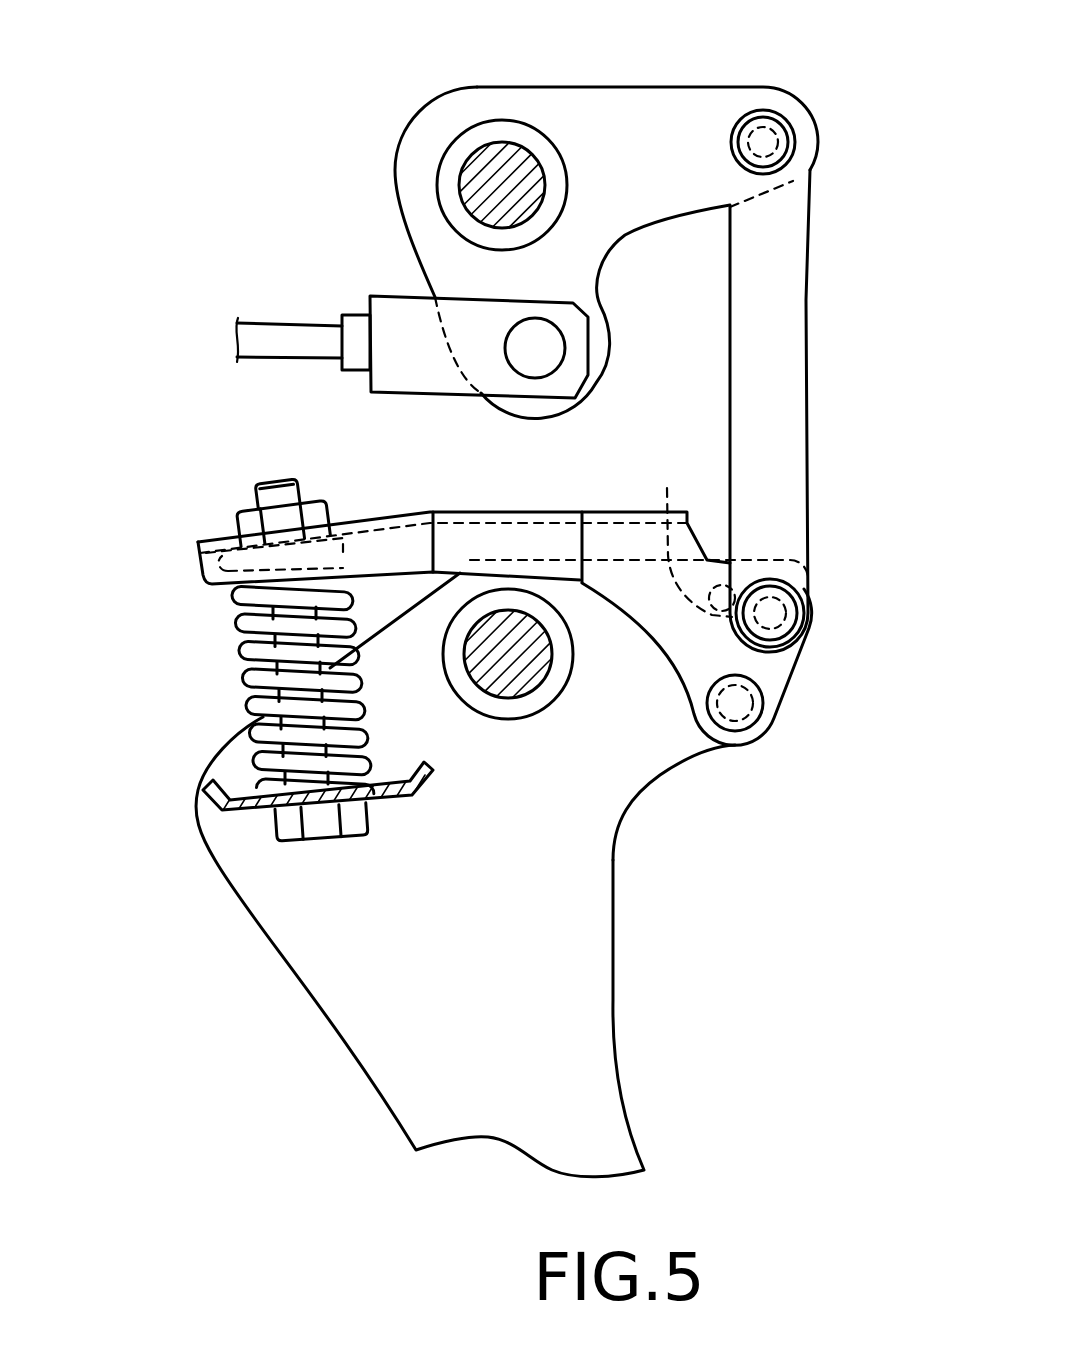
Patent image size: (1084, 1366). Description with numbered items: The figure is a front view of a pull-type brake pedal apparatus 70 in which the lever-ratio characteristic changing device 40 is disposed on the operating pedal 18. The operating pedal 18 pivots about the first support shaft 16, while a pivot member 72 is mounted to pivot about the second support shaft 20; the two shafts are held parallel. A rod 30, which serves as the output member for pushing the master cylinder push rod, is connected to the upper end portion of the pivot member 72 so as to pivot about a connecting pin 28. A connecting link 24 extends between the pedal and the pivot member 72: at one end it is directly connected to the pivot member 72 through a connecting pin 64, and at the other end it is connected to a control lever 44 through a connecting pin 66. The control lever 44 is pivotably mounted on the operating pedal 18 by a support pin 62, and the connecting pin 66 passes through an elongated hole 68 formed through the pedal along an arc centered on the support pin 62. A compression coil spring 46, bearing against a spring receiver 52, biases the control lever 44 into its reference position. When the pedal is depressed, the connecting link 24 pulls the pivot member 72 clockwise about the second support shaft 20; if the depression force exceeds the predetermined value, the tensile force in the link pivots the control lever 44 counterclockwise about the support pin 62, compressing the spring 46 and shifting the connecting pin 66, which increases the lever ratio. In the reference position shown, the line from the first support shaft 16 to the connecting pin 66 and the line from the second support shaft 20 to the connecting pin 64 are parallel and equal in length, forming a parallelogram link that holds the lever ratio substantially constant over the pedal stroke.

The first support shaft 16 is at (523, 677).
The operating pedal 18 is at (594, 1052).
The second support shaft 20 is at (484, 160).
The connecting link 24 is at (787, 365).
The connecting pin 28 is at (533, 362).
The rod 30 is at (272, 337).
The lever-ratio characteristic changing device 40 is at (228, 455).
The control lever 44 is at (474, 527).
The compression coil spring 46 is at (253, 676).
The spring receiver 52 is at (243, 810).
The support pin 62 is at (740, 704).
The connecting pin 64 is at (764, 135).
The connecting pin 66 is at (772, 613).
The elongated hole 68 is at (691, 533).
The brake pedal apparatus 70 is at (236, 126).
The pivot member 72 is at (631, 132).